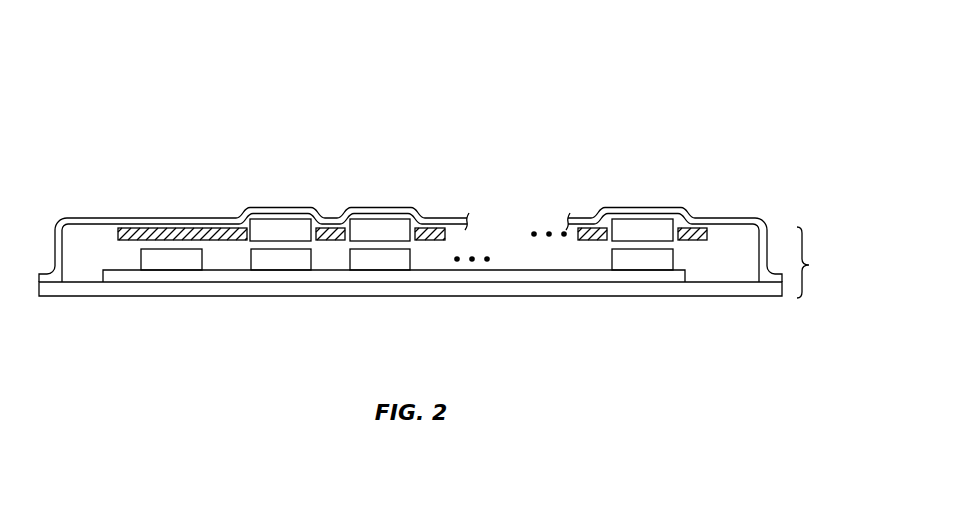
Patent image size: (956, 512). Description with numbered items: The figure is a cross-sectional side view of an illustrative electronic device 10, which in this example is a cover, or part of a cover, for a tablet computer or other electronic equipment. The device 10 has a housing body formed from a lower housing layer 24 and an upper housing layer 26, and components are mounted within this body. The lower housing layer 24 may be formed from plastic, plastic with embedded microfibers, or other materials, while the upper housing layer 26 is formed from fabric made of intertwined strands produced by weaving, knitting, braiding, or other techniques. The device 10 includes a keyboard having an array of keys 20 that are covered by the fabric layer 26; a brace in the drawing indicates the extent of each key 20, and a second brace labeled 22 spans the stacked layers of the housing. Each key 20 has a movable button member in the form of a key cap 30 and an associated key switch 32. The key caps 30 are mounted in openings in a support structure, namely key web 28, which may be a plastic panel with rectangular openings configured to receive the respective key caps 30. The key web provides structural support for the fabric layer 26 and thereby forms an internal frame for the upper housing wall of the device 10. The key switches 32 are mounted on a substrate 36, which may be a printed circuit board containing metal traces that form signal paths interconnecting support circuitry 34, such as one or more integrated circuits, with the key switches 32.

The electronic device 10 is at (762, 80).
The key 20 is at (451, 248).
The layered structure 22 is at (814, 262).
The lower housing layer 24 is at (600, 288).
The upper housing layer 26 is at (742, 217).
The key web 28 is at (156, 232).
The key cap 30 is at (318, 190).
The key switch 32 is at (278, 258).
The support circuitry 34 is at (183, 258).
The substrate 36 is at (108, 279).